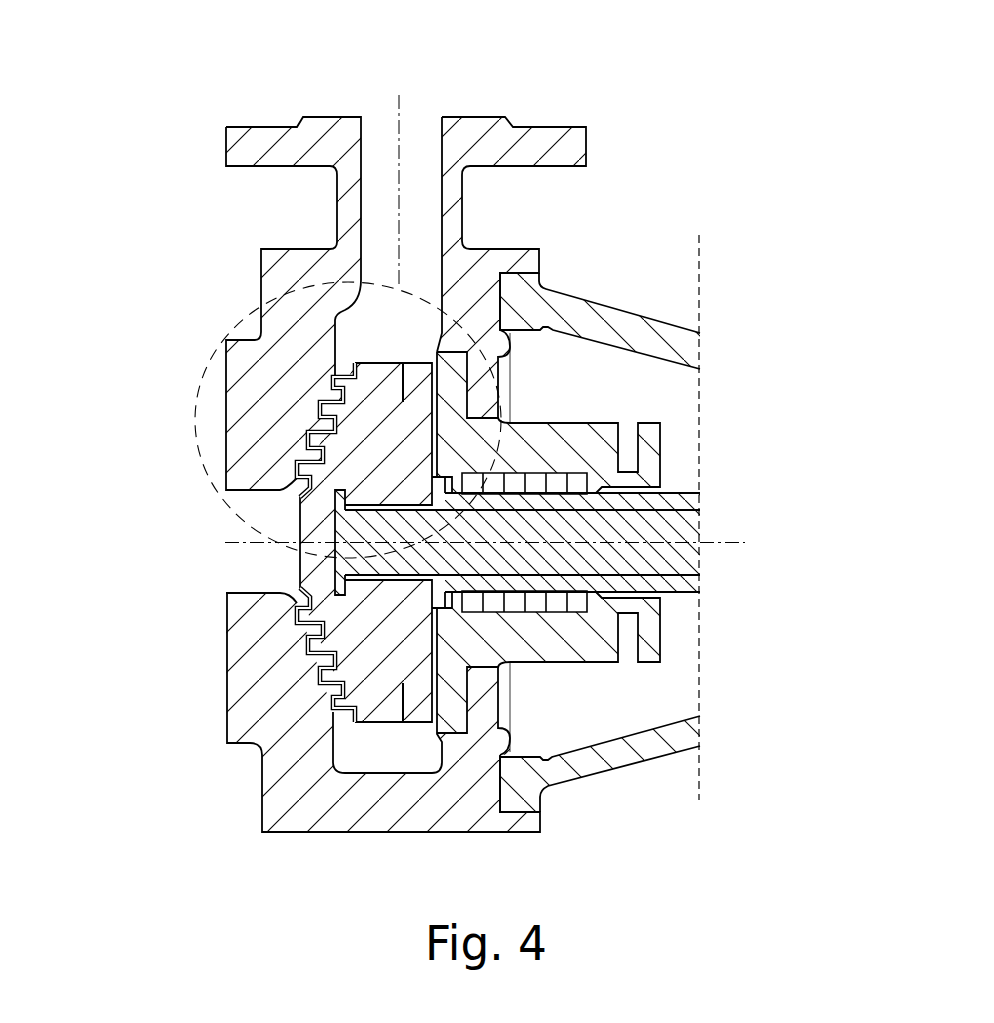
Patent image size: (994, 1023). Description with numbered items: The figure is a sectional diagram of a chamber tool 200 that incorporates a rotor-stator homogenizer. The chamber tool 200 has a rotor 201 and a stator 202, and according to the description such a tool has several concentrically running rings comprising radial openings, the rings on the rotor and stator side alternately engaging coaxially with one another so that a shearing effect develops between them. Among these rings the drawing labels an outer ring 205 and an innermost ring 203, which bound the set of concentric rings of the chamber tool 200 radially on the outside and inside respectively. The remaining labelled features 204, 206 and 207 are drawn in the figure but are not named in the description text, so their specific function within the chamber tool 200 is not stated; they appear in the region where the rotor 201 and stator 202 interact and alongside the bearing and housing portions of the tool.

The chamber tool 200 is at (301, 99).
The rotor 201 is at (405, 457).
The stator 202 is at (258, 338).
The innermost ring 203 is at (290, 482).
The labyrinth seal upper teeth 204 is at (297, 472).
The outer ring 205 is at (342, 372).
The bearing housing 206 is at (540, 270).
The housing flange portion 207 is at (315, 417).